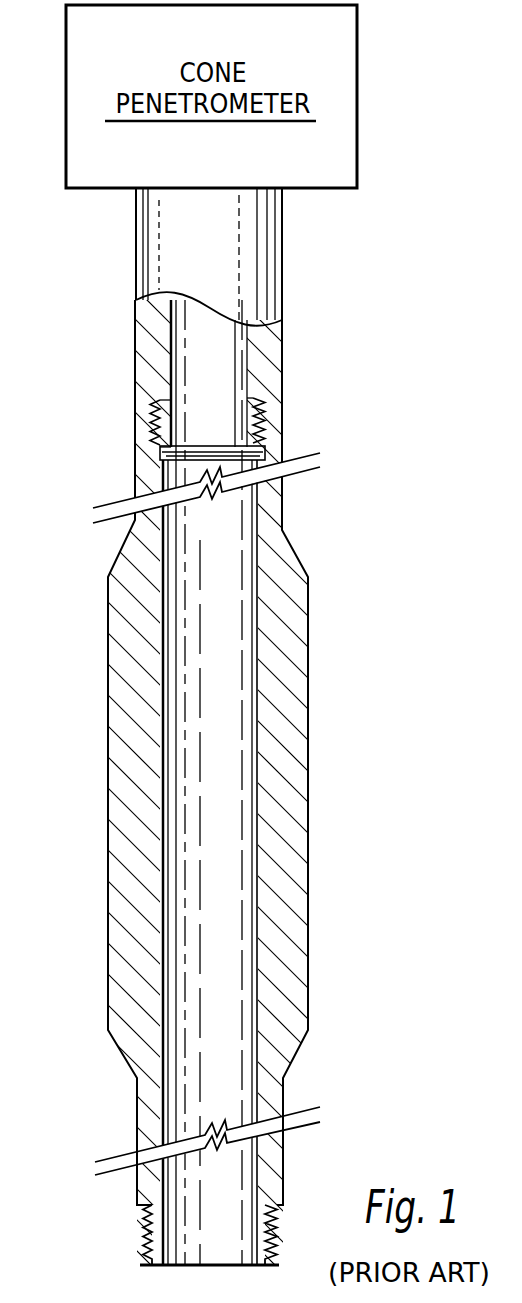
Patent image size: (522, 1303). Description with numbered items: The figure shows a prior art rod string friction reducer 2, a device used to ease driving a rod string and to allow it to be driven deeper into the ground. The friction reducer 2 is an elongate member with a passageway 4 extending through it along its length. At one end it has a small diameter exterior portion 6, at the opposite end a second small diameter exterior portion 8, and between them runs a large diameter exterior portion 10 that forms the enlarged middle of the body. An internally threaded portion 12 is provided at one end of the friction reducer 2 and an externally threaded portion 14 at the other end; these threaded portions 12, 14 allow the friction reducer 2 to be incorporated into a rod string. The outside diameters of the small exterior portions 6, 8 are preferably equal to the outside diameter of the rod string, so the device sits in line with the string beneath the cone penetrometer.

The rod string friction reducer 2 is at (216, 410).
The passageway 4 is at (225, 537).
The small diameter exterior portion 6 is at (277, 432).
The small diameter exterior portion 8 is at (143, 1118).
The large diameter exterior portion 10 is at (122, 718).
The internally threaded portion 12 is at (160, 457).
The externally threaded portion 14 is at (145, 1237).